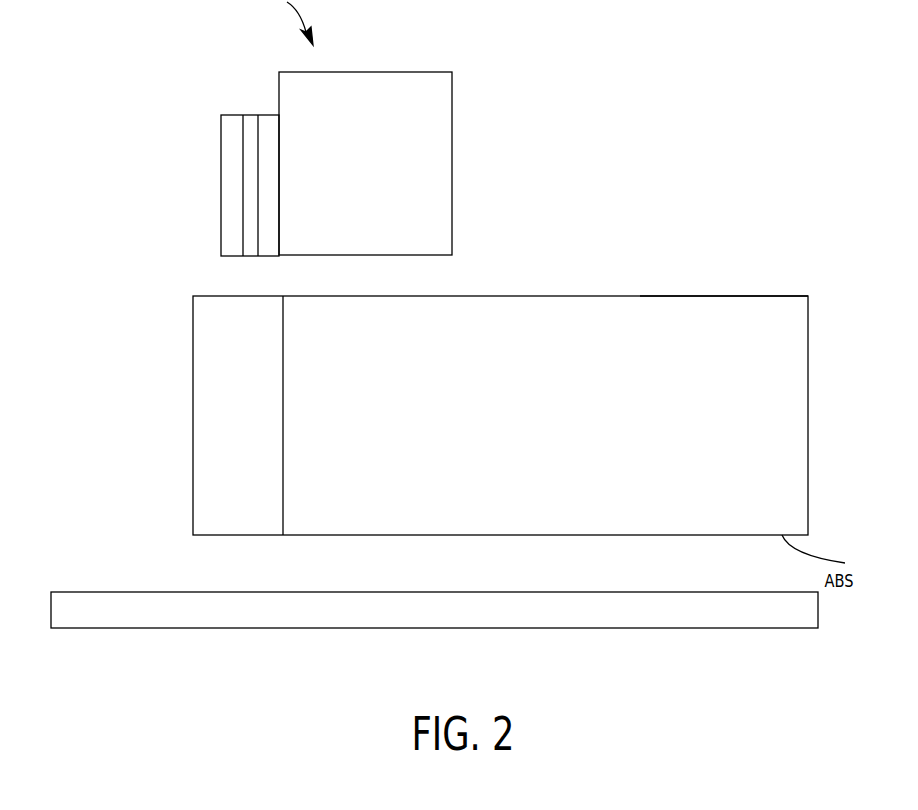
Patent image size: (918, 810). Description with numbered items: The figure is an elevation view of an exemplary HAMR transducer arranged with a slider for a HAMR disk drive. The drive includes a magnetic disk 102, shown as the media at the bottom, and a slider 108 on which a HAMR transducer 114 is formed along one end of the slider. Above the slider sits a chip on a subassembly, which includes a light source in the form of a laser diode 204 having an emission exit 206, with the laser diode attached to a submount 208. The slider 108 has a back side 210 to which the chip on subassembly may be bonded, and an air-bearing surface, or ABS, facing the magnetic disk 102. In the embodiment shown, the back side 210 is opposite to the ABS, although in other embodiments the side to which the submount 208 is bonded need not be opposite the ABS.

The magnetic disk 102 is at (195, 629).
The slider 108 is at (808, 417).
The HAMR transducer 114 is at (193, 385).
The laser diode 204 is at (230, 163).
The emission exit 206 is at (250, 247).
The submount 208 is at (443, 163).
The back side 210 is at (755, 294).